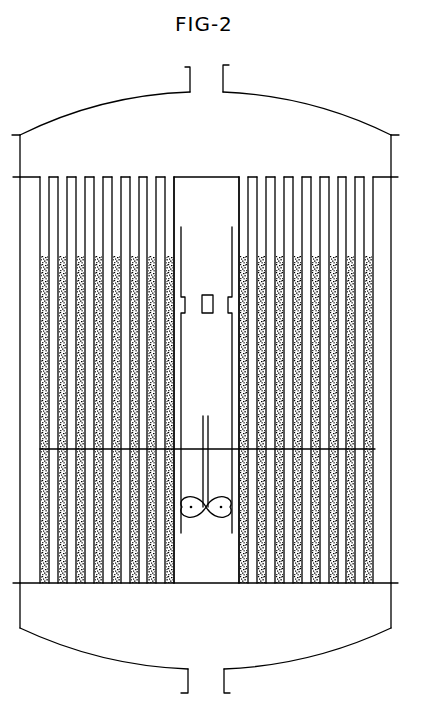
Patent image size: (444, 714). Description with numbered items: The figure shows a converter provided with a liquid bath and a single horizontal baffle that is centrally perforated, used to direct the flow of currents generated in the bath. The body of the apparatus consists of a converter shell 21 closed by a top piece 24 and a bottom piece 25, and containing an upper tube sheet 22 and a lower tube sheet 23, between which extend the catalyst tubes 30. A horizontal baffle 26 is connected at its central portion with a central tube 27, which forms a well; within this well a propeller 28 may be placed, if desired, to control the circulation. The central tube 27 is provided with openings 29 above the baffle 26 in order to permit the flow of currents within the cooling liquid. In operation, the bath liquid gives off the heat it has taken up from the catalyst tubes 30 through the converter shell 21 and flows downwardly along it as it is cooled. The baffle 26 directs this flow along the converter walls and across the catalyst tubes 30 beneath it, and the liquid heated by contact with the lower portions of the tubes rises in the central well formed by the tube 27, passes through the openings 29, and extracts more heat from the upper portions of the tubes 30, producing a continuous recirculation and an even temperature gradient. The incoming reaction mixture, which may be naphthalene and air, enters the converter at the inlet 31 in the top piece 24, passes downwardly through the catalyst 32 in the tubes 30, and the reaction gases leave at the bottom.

The converter shell 21 is at (391, 343).
The upper tube sheet 22 is at (364, 177).
The lower tube sheet 23 is at (382, 589).
The top piece 24 is at (330, 110).
The bottom piece 25 is at (321, 655).
The horizontal baffle 26 is at (236, 445).
The central tube 27 is at (230, 528).
The propeller 28 is at (189, 516).
The openings 29 is at (190, 300).
The catalyst tubes 30 is at (373, 279).
The converter inlet 31 is at (234, 76).
The catalyst 32 is at (373, 246).